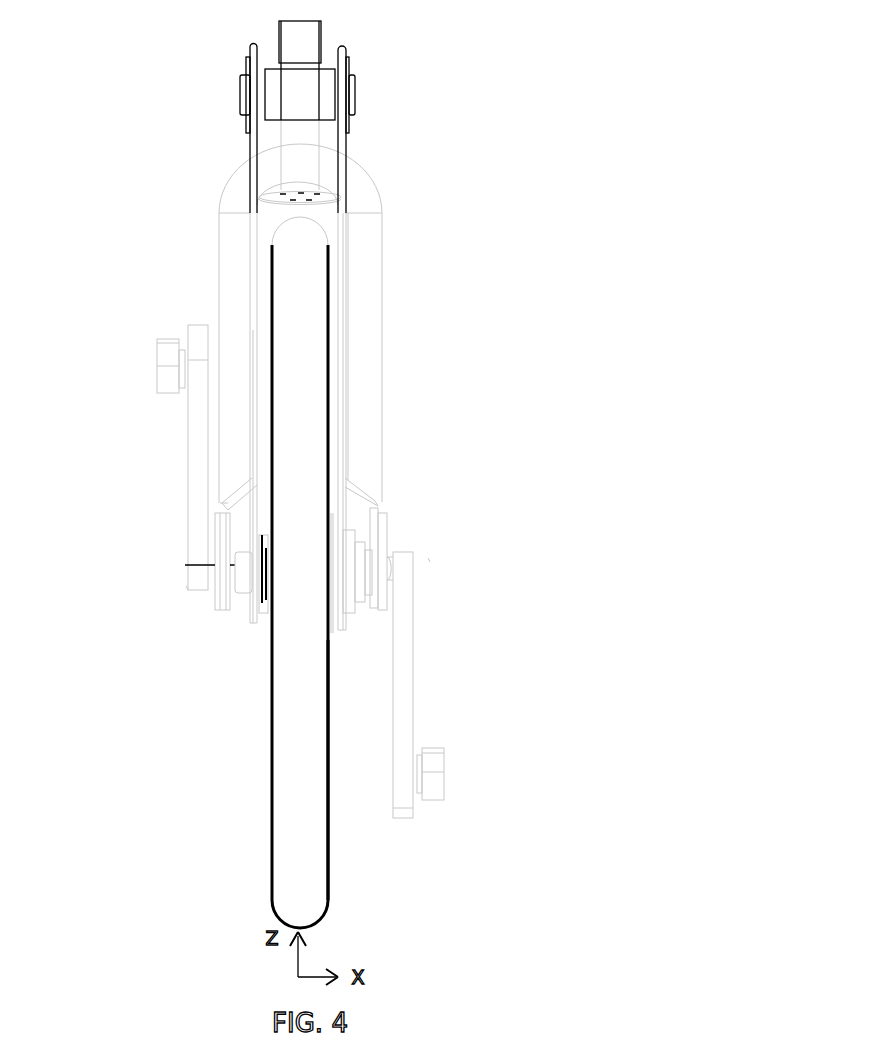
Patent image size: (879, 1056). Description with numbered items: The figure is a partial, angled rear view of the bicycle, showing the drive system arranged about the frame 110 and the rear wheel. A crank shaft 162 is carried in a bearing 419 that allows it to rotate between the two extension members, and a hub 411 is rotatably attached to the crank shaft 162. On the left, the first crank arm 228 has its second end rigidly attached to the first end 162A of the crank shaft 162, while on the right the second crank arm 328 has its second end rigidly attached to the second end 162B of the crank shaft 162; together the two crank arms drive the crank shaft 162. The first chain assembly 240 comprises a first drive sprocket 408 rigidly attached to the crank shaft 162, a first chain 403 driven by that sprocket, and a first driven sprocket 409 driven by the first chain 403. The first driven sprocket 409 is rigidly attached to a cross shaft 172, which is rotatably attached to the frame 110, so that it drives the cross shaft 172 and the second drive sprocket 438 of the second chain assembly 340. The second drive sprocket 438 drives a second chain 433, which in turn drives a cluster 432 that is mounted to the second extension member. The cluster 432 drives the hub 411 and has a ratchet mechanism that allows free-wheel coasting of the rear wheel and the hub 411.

The frame 110 is at (308, 29).
The cross shaft 172 is at (240, 90).
The first driven sprocket 409 is at (248, 133).
The second drive sprocket 438 is at (347, 128).
The second chain 433 is at (345, 172).
The first chain 403 is at (250, 170).
The first crank arm 228 is at (188, 488).
The second crank arm 328 is at (413, 627).
The bearing 419 is at (215, 604).
The crank shaft 162 is at (235, 566).
The first end of the crank shaft 162A is at (188, 588).
The second end of the crank shaft 162B is at (428, 560).
The first drive sprocket 408 is at (256, 612).
The hub 411 is at (262, 617).
The first chain assembly 240 is at (263, 637).
The second chain assembly 340 is at (348, 635).
The cluster 432 is at (350, 615).